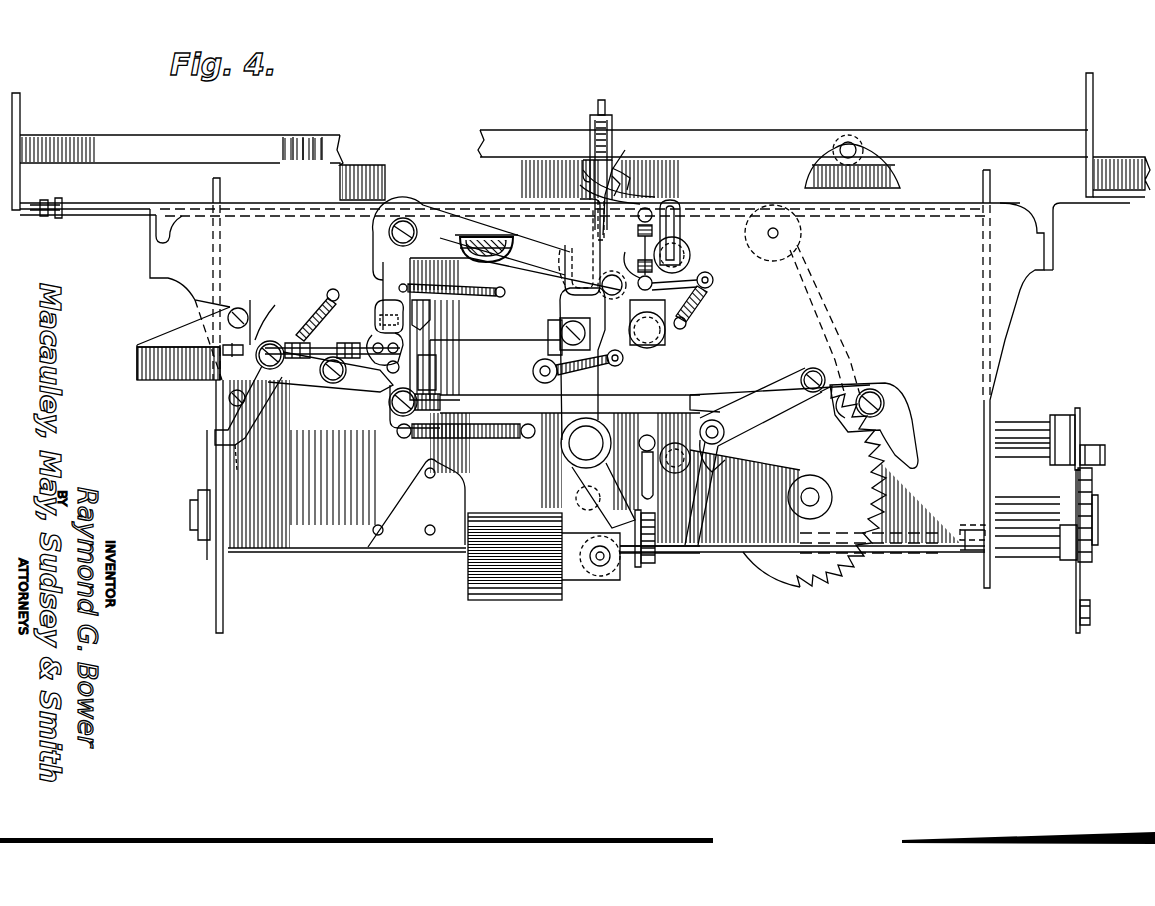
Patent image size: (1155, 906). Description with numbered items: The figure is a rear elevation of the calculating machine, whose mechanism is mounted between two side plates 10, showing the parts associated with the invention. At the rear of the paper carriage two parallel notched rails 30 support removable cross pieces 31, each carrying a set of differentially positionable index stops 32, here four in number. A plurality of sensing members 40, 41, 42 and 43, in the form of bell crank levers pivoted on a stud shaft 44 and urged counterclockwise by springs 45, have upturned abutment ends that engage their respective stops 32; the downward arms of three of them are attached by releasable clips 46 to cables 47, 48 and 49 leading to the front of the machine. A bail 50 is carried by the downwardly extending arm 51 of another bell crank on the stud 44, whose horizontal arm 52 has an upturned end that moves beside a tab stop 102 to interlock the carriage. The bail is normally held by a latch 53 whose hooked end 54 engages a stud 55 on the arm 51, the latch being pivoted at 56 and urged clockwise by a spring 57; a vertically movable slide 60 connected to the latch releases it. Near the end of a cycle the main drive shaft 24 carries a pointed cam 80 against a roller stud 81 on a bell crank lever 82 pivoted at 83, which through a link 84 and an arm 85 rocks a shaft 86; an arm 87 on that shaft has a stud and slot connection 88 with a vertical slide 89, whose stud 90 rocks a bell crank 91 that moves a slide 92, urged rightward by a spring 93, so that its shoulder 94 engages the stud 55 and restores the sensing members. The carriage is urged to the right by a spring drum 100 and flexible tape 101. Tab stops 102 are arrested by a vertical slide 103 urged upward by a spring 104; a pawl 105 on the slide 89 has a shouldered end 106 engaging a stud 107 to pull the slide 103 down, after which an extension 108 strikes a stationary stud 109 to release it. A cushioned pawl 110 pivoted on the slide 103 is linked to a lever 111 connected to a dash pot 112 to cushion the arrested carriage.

The side plates 10 is at (247, 600).
The main drive shaft 24 is at (1027, 505).
The rails 30 is at (288, 145).
The cross pieces 31 is at (612, 120).
The stops 32 is at (626, 160).
The sensing member 40 is at (498, 232).
The sensing member 41 is at (508, 235).
The sensing member 42 is at (516, 235).
The sensing member 43 is at (526, 237).
The stud shaft 44 is at (398, 233).
The springs 45 is at (462, 298).
The releasable clips 46 is at (360, 376).
The cable 47 is at (257, 348).
The cable 48 is at (247, 347).
The cable 49 is at (230, 346).
The bail 50 is at (432, 316).
The arm 51 is at (378, 310).
The horizontal arm 52 is at (597, 220).
The latch 53 is at (335, 385).
The hooked end 54 is at (440, 366).
The stud 55 is at (405, 362).
The pivot 56 is at (325, 400).
The spring 57 is at (320, 296).
The slide 60 is at (268, 425).
The pointed cam 80 is at (1092, 481).
The roller stud 81 is at (1090, 446).
The bell crank lever 82 is at (1079, 412).
The pivot 83 is at (1030, 425).
The link 84 is at (1086, 610).
The arm 85 is at (1082, 572).
The shaft 86 is at (1030, 560).
The arm 87 is at (655, 562).
The stud and slot connection 88 is at (660, 546).
The slide 89 is at (668, 336).
The stud 90 is at (712, 428).
The bell crank 91 is at (740, 436).
The slide 92 is at (788, 392).
The spring 93 is at (487, 440).
The shoulder 94 is at (436, 376).
The spring drum 100 is at (778, 566).
The flexible tape 101 is at (850, 338).
The tab stops 102 is at (583, 160).
The slide 103 is at (655, 197).
The spring 104 is at (660, 248).
The pawl 105 is at (705, 305).
The shouldered end 106 is at (682, 258).
The stud 107 is at (708, 284).
The extension 108 is at (560, 322).
The stationary stud 109 is at (620, 362).
The cushioned pawl 110 is at (630, 178).
The lever 111 is at (560, 445).
The dash pot 112 is at (578, 592).